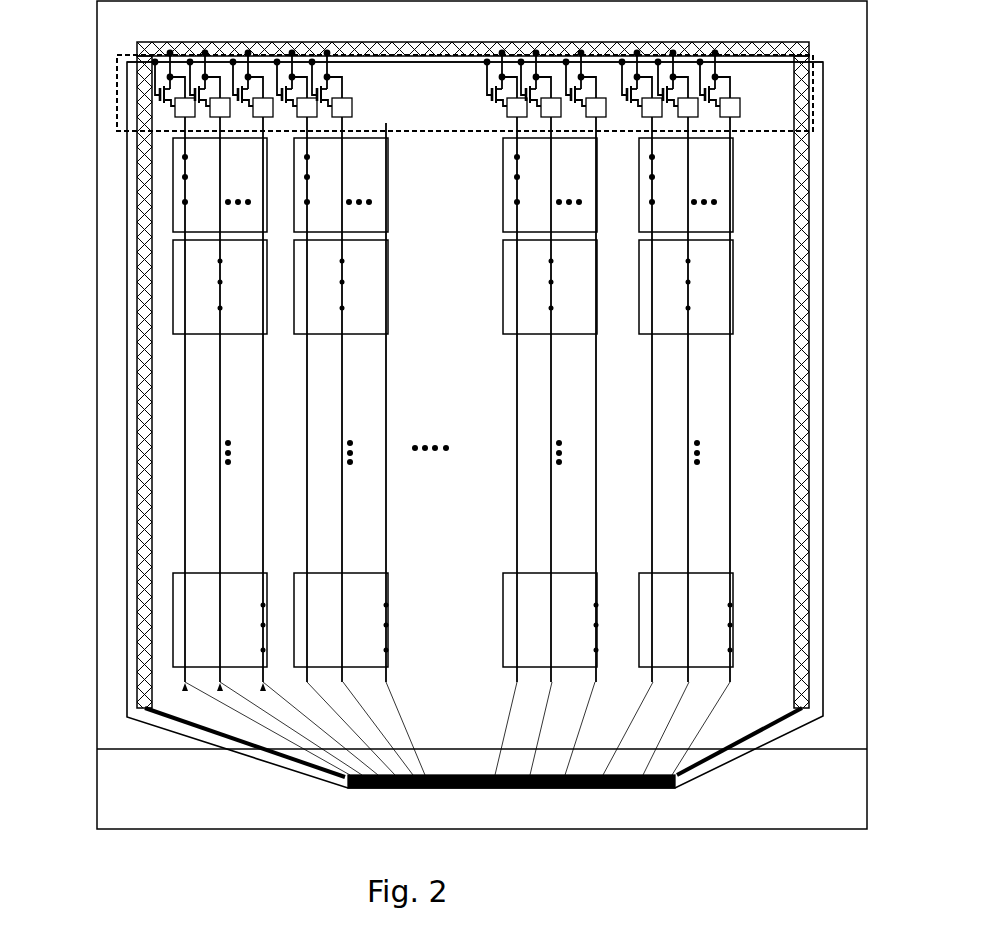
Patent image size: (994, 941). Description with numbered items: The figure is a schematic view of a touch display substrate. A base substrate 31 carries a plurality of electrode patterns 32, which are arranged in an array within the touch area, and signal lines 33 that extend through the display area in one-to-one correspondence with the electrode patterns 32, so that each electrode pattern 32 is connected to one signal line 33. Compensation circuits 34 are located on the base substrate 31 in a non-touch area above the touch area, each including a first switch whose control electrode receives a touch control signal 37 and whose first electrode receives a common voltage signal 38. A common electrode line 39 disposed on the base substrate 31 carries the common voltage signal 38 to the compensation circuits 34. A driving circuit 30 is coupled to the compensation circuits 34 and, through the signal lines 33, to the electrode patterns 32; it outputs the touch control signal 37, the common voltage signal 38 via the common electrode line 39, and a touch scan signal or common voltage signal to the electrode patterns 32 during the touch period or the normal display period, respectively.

The driving circuit 30 is at (453, 789).
The base substrate 31 is at (96, 592).
The electrode patterns 32 is at (173, 167).
The signal lines 33 is at (185, 368).
The compensation circuits 34 is at (160, 104).
The touch control signal 37 is at (127, 247).
The common voltage signal 38 is at (167, 55).
The common electrode line 39 is at (152, 330).